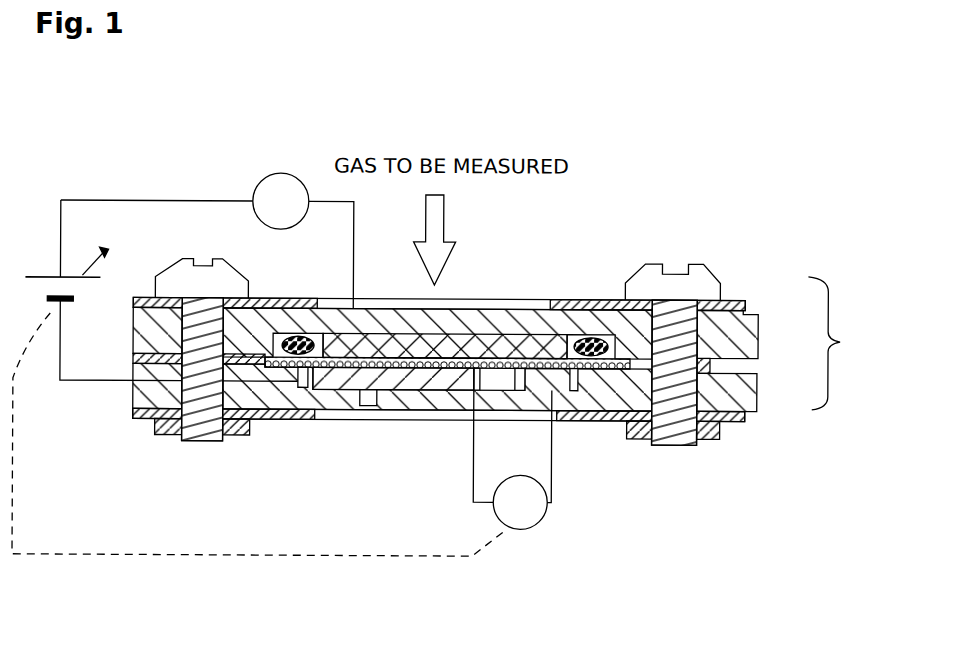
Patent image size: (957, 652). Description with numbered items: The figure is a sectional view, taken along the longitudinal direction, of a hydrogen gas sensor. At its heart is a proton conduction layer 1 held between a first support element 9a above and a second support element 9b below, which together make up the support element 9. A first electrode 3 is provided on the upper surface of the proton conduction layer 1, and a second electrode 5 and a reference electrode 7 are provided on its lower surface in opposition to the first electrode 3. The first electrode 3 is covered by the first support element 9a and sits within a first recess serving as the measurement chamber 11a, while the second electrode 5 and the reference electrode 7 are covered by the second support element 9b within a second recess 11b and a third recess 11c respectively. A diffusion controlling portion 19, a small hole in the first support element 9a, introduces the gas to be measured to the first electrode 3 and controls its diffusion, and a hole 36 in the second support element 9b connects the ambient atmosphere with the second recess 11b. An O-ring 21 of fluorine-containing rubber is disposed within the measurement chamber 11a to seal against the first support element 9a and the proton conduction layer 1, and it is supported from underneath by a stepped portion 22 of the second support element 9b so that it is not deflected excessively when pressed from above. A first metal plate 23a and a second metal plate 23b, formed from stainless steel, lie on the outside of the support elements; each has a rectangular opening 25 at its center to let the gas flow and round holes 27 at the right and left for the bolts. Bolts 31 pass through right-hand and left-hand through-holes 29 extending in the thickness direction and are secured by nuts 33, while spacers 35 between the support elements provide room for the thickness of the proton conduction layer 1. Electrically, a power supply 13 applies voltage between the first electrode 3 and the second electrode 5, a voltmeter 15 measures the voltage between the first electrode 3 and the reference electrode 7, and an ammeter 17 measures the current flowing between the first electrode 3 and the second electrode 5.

The proton conduction layer 1 is at (512, 338).
The first electrode 3 is at (462, 337).
The second electrode 5 is at (417, 392).
The reference electrode 7 is at (560, 393).
The support element 9 is at (836, 343).
The first support element 9a is at (746, 325).
The second support element 9b is at (746, 390).
The first recess (measurement chamber) 11a is at (583, 335).
The second recess (second chamber) 11b is at (292, 372).
The third recess (third chamber) 11c is at (578, 385).
The power supply (cell) 13 is at (72, 297).
The voltmeter 15 is at (538, 529).
The ammeter 17 is at (280, 174).
The diffusion controlling portion 19 is at (397, 320).
The O-ring 21 is at (294, 333).
The stepped portion 22 is at (617, 395).
The first metal plate 23a is at (714, 298).
The second metal plate 23b is at (728, 426).
The rectangular opening 25 is at (322, 298).
The round hole 27 is at (212, 300).
The through-hole 29 is at (200, 430).
The bolt 31 is at (175, 281).
The nut 33 is at (167, 434).
The spacer 35 is at (160, 358).
The hole 36 is at (370, 402).